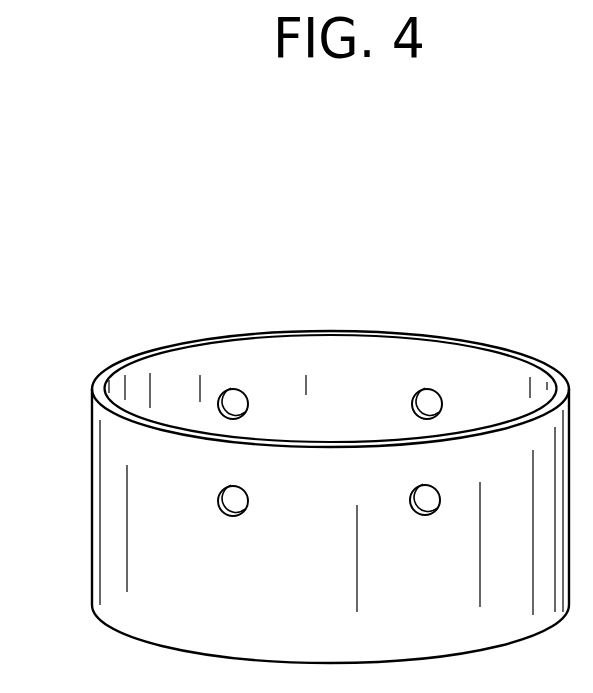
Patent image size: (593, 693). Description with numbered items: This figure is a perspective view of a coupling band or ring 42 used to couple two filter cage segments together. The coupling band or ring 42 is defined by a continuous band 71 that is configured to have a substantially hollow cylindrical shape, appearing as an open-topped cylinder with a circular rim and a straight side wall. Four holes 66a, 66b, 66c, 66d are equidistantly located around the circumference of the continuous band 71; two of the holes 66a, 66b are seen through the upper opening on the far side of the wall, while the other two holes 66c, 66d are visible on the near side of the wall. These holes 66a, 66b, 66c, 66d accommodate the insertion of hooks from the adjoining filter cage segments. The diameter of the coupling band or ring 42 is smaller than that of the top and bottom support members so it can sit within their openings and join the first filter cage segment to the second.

The coupling band or ring 42 is at (318, 256).
The continuous band 71 is at (92, 482).
The hole 66a is at (441, 397).
The hole 66b is at (222, 392).
The hole 66c is at (238, 516).
The hole 66d is at (427, 515).